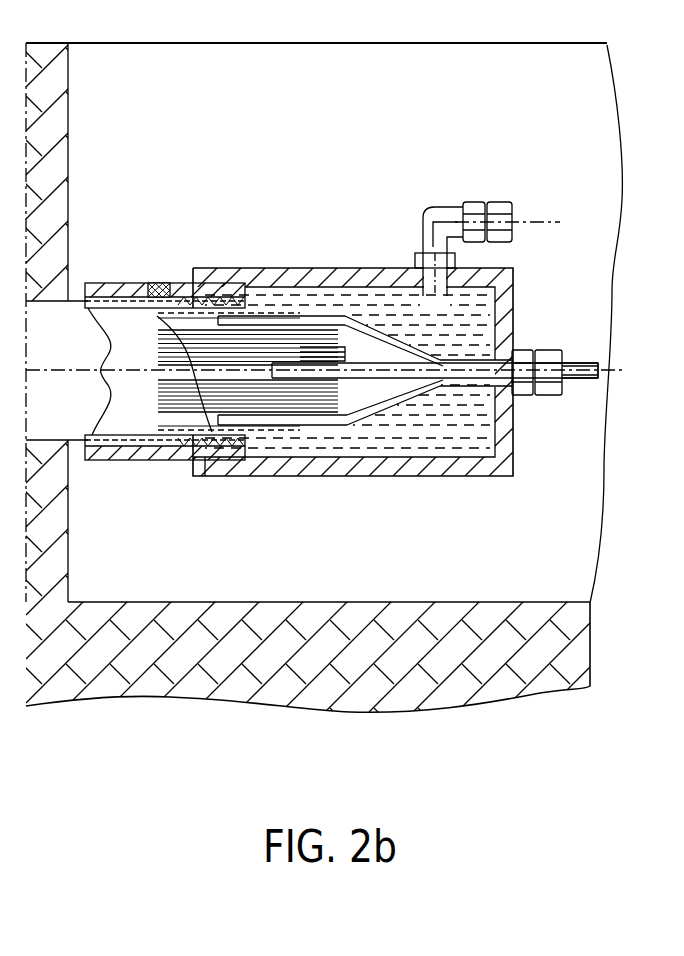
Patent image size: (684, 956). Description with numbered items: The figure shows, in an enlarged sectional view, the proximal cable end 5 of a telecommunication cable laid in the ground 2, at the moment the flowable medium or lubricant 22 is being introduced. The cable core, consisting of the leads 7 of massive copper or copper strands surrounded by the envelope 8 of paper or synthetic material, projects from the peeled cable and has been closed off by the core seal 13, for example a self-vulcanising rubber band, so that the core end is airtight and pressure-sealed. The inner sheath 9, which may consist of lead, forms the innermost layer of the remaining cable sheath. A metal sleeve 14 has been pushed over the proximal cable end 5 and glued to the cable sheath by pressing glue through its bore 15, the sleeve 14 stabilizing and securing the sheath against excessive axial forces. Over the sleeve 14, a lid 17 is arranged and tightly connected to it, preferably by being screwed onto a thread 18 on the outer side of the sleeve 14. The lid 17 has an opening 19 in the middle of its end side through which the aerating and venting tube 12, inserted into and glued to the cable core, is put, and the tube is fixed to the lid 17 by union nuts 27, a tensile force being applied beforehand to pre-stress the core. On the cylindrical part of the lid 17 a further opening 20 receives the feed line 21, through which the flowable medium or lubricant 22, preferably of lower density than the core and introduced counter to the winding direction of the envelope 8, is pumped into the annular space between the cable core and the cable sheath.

The ground 2 is at (85, 637).
The proximal cable end 5 is at (577, 240).
The leads 7 is at (287, 400).
The envelope 8 is at (275, 327).
The inner sheath 9 is at (207, 287).
The aerating and venting tube 12 is at (584, 378).
The core seal 13 is at (373, 330).
The sleeve 14 is at (127, 452).
The bore 15 is at (160, 287).
The lid 17 is at (372, 465).
The thread 18 is at (207, 460).
The opening 19 is at (514, 352).
The further opening 20 is at (414, 258).
The feed line 21 is at (450, 215).
The flowable medium or lubricant 22 is at (470, 315).
The union nuts 27 is at (547, 395).